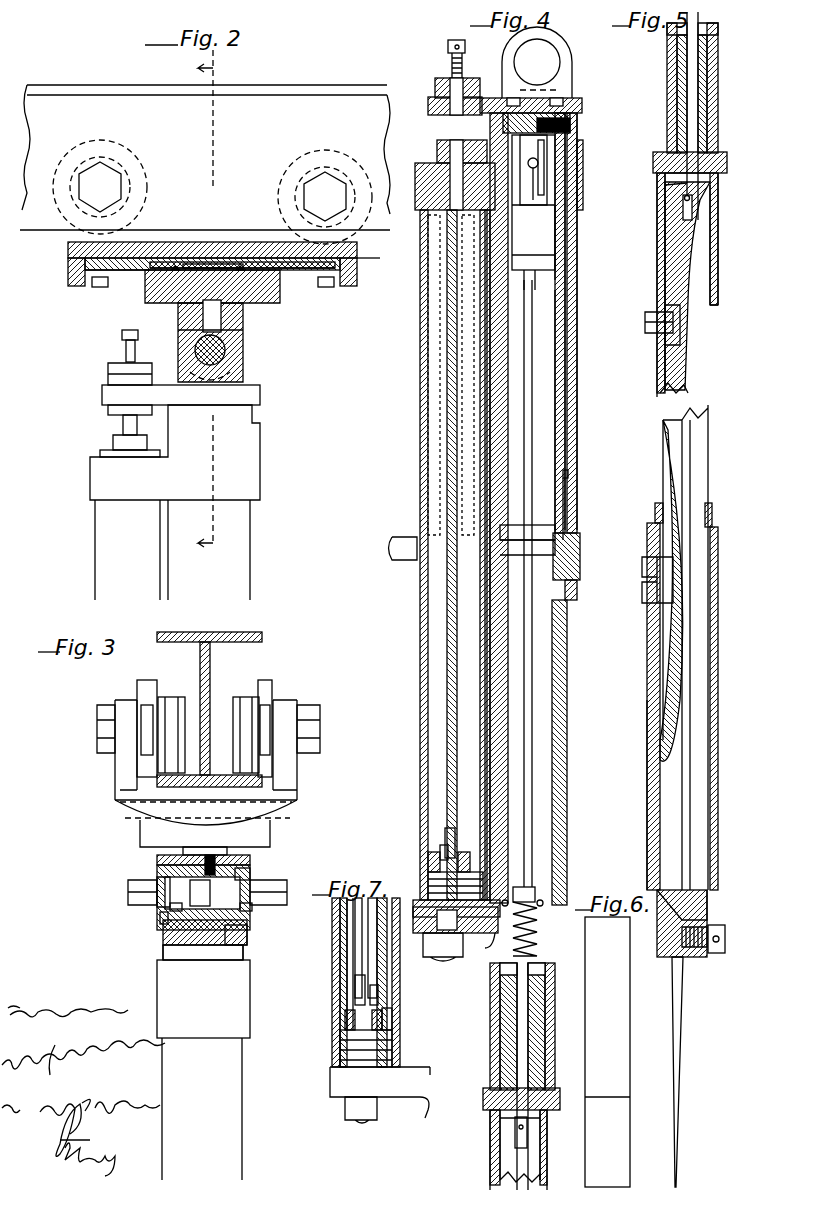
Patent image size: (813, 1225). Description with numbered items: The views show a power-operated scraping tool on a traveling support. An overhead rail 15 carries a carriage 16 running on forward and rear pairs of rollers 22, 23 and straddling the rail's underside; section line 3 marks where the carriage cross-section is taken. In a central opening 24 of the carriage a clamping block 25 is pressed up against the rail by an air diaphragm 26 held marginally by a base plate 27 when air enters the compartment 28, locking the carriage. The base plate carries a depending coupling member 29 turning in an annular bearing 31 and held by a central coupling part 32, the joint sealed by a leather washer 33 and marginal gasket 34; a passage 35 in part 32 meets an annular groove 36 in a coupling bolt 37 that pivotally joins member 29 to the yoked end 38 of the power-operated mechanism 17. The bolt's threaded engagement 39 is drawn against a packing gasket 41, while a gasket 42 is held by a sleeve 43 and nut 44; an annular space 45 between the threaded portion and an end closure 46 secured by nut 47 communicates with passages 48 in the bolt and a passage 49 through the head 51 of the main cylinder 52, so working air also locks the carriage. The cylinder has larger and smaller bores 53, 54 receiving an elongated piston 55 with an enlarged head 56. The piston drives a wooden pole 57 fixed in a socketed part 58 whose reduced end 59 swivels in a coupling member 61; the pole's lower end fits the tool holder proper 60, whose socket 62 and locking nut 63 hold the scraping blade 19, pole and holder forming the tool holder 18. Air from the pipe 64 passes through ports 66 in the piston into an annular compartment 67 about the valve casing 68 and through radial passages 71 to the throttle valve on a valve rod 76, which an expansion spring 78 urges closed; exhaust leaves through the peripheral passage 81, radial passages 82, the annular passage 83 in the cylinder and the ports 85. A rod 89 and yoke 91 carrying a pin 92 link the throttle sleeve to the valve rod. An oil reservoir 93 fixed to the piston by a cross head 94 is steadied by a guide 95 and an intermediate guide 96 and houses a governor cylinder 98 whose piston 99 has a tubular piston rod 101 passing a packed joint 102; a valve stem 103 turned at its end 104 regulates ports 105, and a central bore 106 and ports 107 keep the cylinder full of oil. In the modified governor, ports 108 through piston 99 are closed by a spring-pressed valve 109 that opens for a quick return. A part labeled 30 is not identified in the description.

In FIG. 2, the section line 3 is at (214, 300).
In FIG. 2, the channel beam or rail 15 is at (256, 137).
In FIG. 3, the channel beam or rail 15 is at (212, 662).
In FIG. 2, the carriage 16 is at (68, 268).
In FIG. 3, the carriage 16 is at (115, 780).
In FIG. 4, the power-operated mechanism 17 is at (578, 355).
In FIG. 5, the tool holder 18 is at (708, 430).
In FIG. 5, the scraping blade 19 is at (683, 1035).
In FIG. 6, the scraping blade 19 is at (607, 1052).
In FIG. 2, the forward pair of rollers 22 is at (332, 152).
In FIG. 2, the rear pair of rollers 23 is at (119, 152).
In FIG. 3, the rear pair of rollers 23 is at (170, 700).
In FIG. 2, the central opening 24 is at (357, 262).
In FIG. 2, the clamping block 25 is at (262, 259).
In FIG. 3, the clamping block 25 is at (270, 800).
In FIG. 2, the diaphragm 26 is at (154, 262).
In FIG. 3, the diaphragm 26 is at (292, 806).
In FIG. 2, the base plate 27 is at (124, 270).
In FIG. 3, the base plate 27 is at (118, 801).
In FIG. 2, the compartment 28 is at (210, 264).
In FIG. 2, the coupling member 29 is at (238, 332).
In FIG. 3, the coupling member 29 is at (180, 852).
In FIG. 2, the pivot pin 30 is at (226, 353).
In FIG. 2, the annular bearing 31 is at (150, 304).
In FIG. 2, the central coupling part 32 is at (180, 315).
In FIG. 3, the central coupling part 32 is at (180, 834).
In FIG. 2, the leather washer 33 is at (174, 264).
In FIG. 2, the marginal gasket 34 is at (242, 266).
In FIG. 2, the passage 35 is at (222, 316).
In FIG. 3, the passage 35 is at (215, 853).
In FIG. 3, the annular groove 36 is at (203, 952).
In FIG. 2, the coupling bolt 37 is at (177, 358).
In FIG. 3, the coupling bolt 37 is at (255, 912).
In FIG. 2, the bifurcated or yoked end 38 is at (240, 378).
In FIG. 3, the bifurcated or yoked end 38 is at (250, 866).
In FIG. 4, the bifurcated or yoked end 38 is at (566, 48).
In FIG. 3, the threaded engagement 39 is at (160, 865).
In FIG. 3, the packing gasket 41 is at (170, 930).
In FIG. 3, the packing gasket 42 is at (250, 940).
In FIG. 3, the sleeve 43 is at (252, 875).
In FIG. 3, the nut 44 is at (287, 890).
In FIG. 3, the annular space 45 is at (165, 918).
In FIG. 3, the end piece or closure 46 is at (157, 883).
In FIG. 3, the nut 47 is at (128, 898).
In FIG. 3, the air passages 48 is at (170, 914).
In FIG. 3, the air passage 49 is at (165, 948).
In FIG. 4, the air passage 49 is at (568, 90).
In FIG. 2, the head 51 is at (260, 396).
In FIG. 2, the main cylinder 52 is at (209, 550).
In FIG. 3, the main cylinder 52 is at (248, 957).
In FIG. 4, the main cylinder 52 is at (582, 108).
In FIG. 4, the larger bore 53 is at (566, 413).
In FIG. 4, the smaller bore 54 is at (565, 672).
In FIG. 4, the piston 55 is at (565, 322).
In FIG. 4, the piston head 56 is at (565, 168).
In FIG. 4, the pole or rod 57 is at (507, 1168).
In FIG. 5, the pole or rod 57 is at (708, 480).
In FIG. 4, the socketed part 58 is at (498, 1111).
In FIG. 5, the socketed part 58 is at (718, 187).
In FIG. 4, the reduced end 59 is at (515, 1013).
In FIG. 5, the reduced end 59 is at (707, 103).
In FIG. 5, the tool holder proper 60 is at (718, 880).
In FIG. 4, the coupling member 61 is at (533, 170).
In FIG. 4, the socket 62 is at (489, 1090).
In FIG. 5, the socket 62 is at (727, 160).
In FIG. 5, the locking nut 63 is at (725, 935).
In FIG. 4, the pipe 64 is at (407, 529).
In FIG. 4, the ports 66 is at (565, 248).
In FIG. 4, the annular compartment 67 is at (555, 226).
In FIG. 4, the valve casing 68 is at (533, 212).
In FIG. 4, the radial passages 71 is at (540, 160).
In FIG. 5, the radial passages 71 is at (718, 662).
In FIG. 4, the valve rod 76 is at (532, 783).
In FIG. 5, the valve rod 76 is at (698, 63).
In FIG. 4, the expansion spring 78 is at (513, 940).
In FIG. 4, the longitudinal peripheral passage 81 is at (570, 133).
In FIG. 4, the radial passages 82 is at (556, 183).
In FIG. 4, the annular passage 83 is at (568, 475).
In FIG. 4, the ports 85 is at (540, 903).
In FIG. 5, the rod 89 is at (663, 453).
In FIG. 4, the yoke 91 is at (490, 1130).
In FIG. 5, the yoke 91 is at (665, 195).
In FIG. 4, the pin 92 is at (527, 1128).
In FIG. 5, the pin 92 is at (692, 198).
In FIG. 2, the oil reservoir 93 is at (127, 550).
In FIG. 4, the oil reservoir 93 is at (417, 610).
In FIG. 5, the oil reservoir 93 is at (662, 325).
In FIG. 7, the oil reservoir 93 is at (342, 946).
In FIG. 4, the cross head 94 is at (455, 938).
In FIG. 7, the cross head 94 is at (380, 1095).
In FIG. 2, the guide 95 is at (175, 452).
In FIG. 3, the guide 95 is at (203, 999).
In FIG. 4, the guide 95 is at (416, 172).
In FIG. 4, the intermediate guide 96 is at (580, 550).
In FIG. 4, the governor cylinder 98 is at (422, 770).
In FIG. 7, the governor cylinder 98 is at (345, 958).
In FIG. 4, the governor piston 99 is at (428, 857).
In FIG. 7, the governor piston 99 is at (345, 1012).
In FIG. 4, the piston rod 101 is at (440, 658).
In FIG. 7, the piston rod 101 is at (350, 931).
In FIG. 4, the packed joint 102 is at (442, 152).
In FIG. 4, the valve stem 103 is at (428, 362).
In FIG. 7, the valve stem 103 is at (336, 905).
In FIG. 4, the end 104 is at (452, 45).
In FIG. 4, the ports 105 is at (440, 827).
In FIG. 7, the ports 105 is at (360, 971).
In FIG. 4, the central bore 106 is at (440, 834).
In FIG. 7, the central bore 106 is at (360, 990).
In FIG. 4, the ports 107 is at (428, 878).
In FIG. 7, the ports 107 is at (340, 1031).
In FIG. 7, the ports 108 is at (385, 1022).
In FIG. 7, the spring-pressed valve 109 is at (383, 1001).